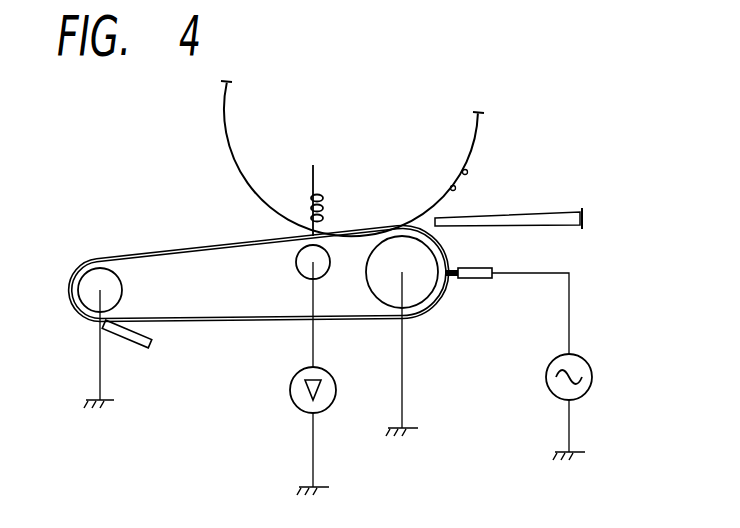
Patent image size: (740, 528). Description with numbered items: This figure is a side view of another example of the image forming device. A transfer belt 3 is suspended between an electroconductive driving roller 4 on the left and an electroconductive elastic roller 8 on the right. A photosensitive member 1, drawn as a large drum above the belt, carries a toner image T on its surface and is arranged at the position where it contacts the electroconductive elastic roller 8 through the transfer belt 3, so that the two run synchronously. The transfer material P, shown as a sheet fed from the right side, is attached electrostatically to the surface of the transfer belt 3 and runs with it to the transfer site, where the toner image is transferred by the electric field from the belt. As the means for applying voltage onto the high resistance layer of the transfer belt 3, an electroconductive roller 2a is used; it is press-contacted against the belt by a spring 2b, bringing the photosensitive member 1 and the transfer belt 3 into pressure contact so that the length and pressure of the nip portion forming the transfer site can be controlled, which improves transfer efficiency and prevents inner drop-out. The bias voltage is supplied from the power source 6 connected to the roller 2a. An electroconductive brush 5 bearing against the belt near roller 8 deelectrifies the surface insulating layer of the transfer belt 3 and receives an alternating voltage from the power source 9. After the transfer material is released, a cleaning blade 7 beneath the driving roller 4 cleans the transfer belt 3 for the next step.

The photosensitive member 1 is at (482, 119).
The electroconductive roller 2a is at (299, 271).
The spring 2b is at (324, 209).
The transfer belt 3 is at (224, 320).
The electroconductive driving roller 4 is at (121, 280).
The electroconductive brush 5 is at (478, 268).
The power source 6 is at (336, 386).
The cleaning blade 7 is at (150, 344).
The electroconductive elastic roller 8 is at (432, 292).
The power source 9 is at (592, 377).
The toner image T is at (468, 172).
The transfer material P is at (566, 212).